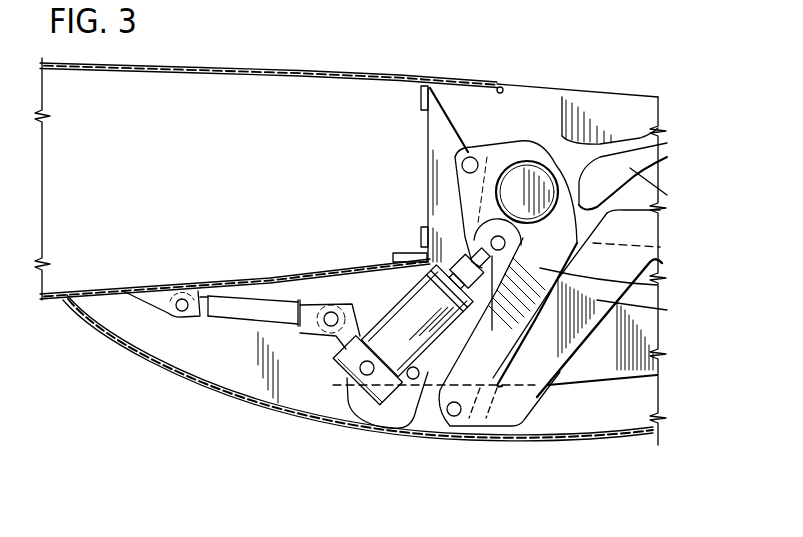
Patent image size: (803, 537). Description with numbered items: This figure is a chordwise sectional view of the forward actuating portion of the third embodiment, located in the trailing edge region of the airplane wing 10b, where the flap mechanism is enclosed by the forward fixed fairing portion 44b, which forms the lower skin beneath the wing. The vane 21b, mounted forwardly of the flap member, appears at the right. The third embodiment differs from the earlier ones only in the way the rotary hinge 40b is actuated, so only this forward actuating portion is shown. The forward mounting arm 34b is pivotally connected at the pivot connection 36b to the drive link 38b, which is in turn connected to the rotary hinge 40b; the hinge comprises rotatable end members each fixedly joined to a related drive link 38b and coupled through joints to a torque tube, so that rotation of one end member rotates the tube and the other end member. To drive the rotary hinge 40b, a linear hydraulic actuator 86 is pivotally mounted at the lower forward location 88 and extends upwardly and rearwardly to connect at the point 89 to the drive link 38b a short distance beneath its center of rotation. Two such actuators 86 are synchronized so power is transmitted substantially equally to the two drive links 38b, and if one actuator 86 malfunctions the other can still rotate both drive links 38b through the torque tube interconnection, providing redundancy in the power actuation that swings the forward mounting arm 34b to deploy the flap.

The airplane wing 10b is at (269, 57).
The vane 21b is at (632, 171).
The forward mounting arm 34b is at (652, 308).
The pivot connection 36b is at (462, 416).
The drive link 38b is at (648, 277).
The rotary hinge 40b is at (533, 168).
The forward fixed fairing portion 44b is at (188, 380).
The linear hydraulic actuator 86 is at (424, 362).
The actuator pivot mount 88 is at (359, 371).
The actuator-to-drive-link connection 89 is at (492, 241).